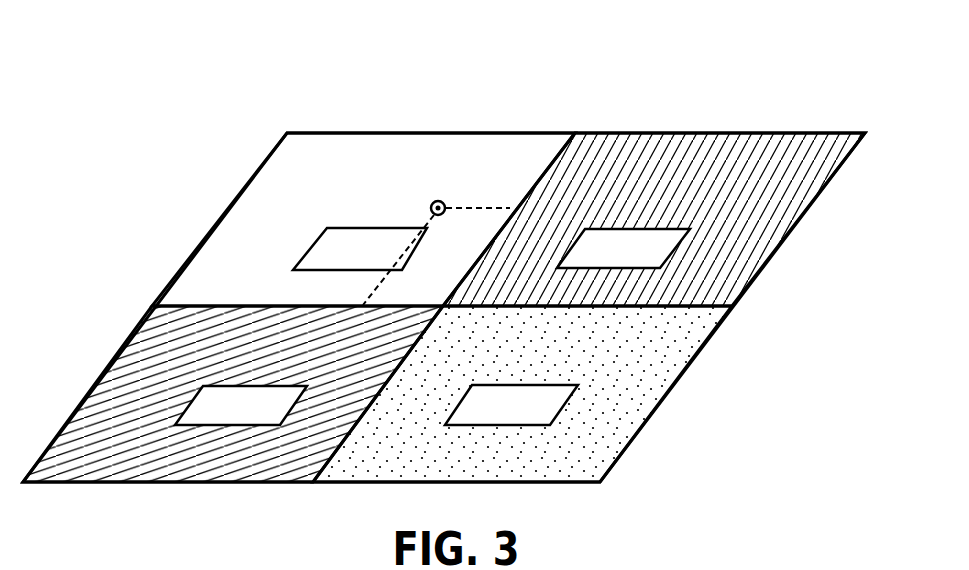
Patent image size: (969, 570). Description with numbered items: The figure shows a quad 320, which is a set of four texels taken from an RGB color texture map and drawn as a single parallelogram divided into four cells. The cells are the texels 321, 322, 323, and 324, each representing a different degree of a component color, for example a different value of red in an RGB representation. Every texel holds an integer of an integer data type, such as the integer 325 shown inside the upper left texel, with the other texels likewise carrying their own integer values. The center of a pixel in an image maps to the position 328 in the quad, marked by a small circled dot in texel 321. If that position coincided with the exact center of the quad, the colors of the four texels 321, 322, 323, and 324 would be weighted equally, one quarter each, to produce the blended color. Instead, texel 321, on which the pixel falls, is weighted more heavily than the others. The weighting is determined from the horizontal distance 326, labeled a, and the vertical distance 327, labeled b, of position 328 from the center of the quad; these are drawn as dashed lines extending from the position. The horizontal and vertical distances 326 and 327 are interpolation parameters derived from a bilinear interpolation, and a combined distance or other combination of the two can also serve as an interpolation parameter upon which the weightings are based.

The quad 320 is at (179, 46).
The texel 321 is at (253, 172).
The texel 322 is at (800, 221).
The texel 323 is at (85, 400).
The texel 324 is at (658, 404).
The integer 325 is at (338, 228).
The horizontal distance 326 is at (510, 208).
The vertical distance 327 is at (378, 283).
The position 328 is at (437, 200).